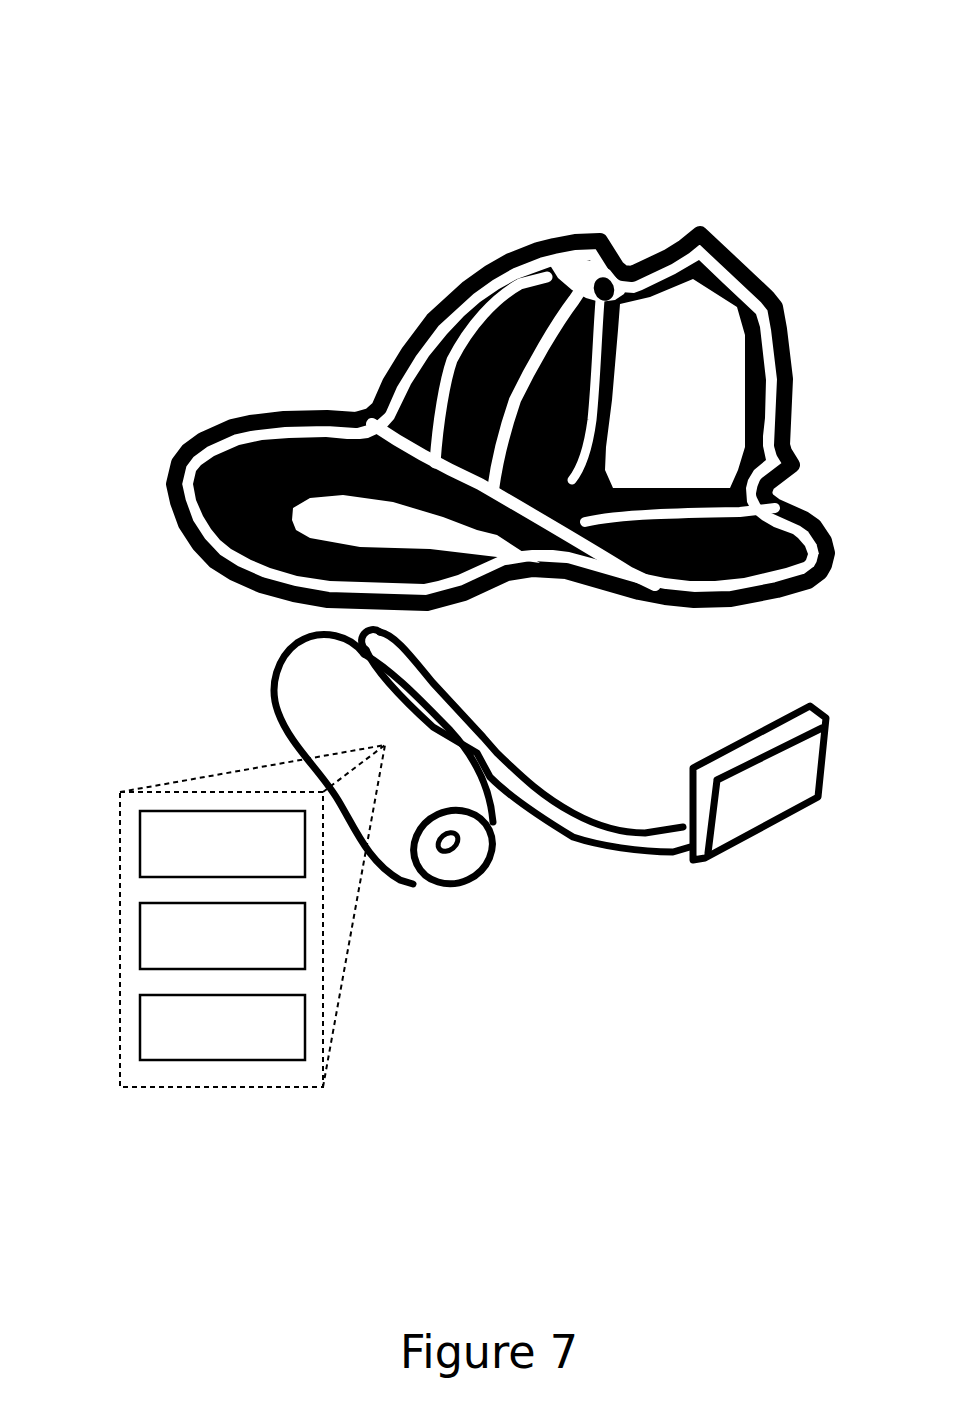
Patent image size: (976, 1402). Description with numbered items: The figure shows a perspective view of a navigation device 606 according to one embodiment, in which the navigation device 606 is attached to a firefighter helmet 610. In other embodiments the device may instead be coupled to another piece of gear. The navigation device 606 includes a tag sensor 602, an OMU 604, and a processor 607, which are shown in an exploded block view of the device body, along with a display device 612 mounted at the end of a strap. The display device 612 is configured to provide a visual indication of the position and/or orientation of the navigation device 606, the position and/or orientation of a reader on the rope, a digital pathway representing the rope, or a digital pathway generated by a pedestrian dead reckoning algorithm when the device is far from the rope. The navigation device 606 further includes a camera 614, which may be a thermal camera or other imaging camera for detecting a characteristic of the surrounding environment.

The tag sensor 602 is at (140, 840).
The OMU 604 is at (140, 932).
The navigation device 606 is at (176, 55).
The processor 607 is at (140, 1025).
The firefighter helmet 610 is at (603, 233).
The display device 612 is at (750, 845).
The camera 614 is at (436, 890).